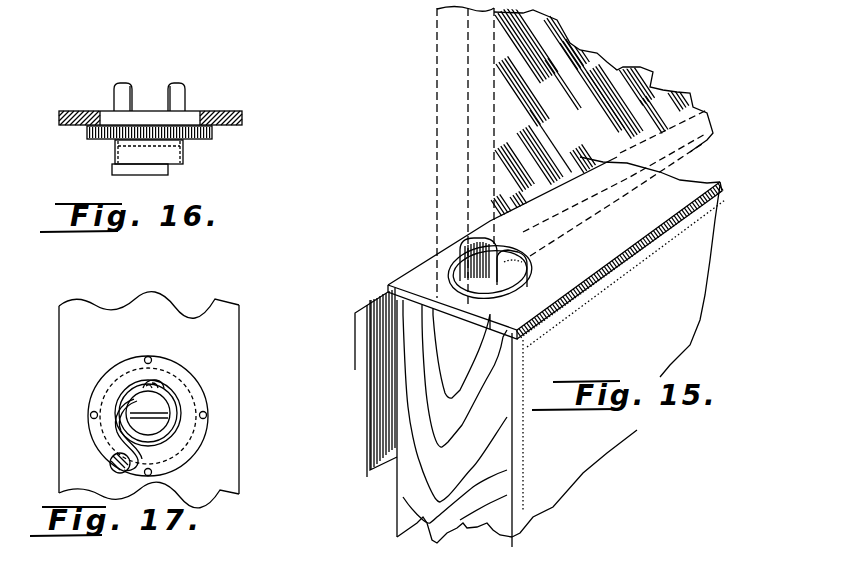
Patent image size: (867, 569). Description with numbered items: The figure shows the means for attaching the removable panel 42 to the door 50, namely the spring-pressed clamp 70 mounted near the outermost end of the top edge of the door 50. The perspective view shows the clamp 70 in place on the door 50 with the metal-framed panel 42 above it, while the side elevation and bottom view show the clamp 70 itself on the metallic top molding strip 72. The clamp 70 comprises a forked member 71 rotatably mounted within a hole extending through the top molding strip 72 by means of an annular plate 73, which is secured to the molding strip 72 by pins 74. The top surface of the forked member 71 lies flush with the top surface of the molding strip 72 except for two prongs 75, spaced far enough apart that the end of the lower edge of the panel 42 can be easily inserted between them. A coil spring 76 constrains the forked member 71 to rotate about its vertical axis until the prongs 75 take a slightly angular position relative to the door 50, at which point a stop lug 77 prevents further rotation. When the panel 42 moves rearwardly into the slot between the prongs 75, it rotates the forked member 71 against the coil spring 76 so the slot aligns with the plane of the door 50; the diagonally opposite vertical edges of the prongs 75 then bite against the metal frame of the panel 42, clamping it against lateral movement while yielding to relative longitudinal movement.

In FIG. 15, the panel 42 is at (590, 72).
In FIG. 15, the door 50 is at (675, 301).
In FIG. 15, the spring-pressed clamp 70 is at (517, 287).
In FIG. 16, the forked member 71 is at (183, 120).
In FIG. 17, the forked member 71 is at (145, 407).
In FIG. 15, the top molding strip 72 is at (388, 287).
In FIG. 16, the top molding strip 72 is at (243, 118).
In FIG. 16, the annular plate 73 is at (213, 135).
In FIG. 17, the annular plate 73 is at (192, 378).
In FIG. 17, the pins 74 is at (151, 357).
In FIG. 15, the prongs 75 is at (500, 248).
In FIG. 16, the prongs 75 is at (178, 94).
In FIG. 16, the coil spring 76 is at (183, 152).
In FIG. 17, the coil spring 76 is at (120, 442).
In FIG. 17, the stop lug 77 is at (157, 384).